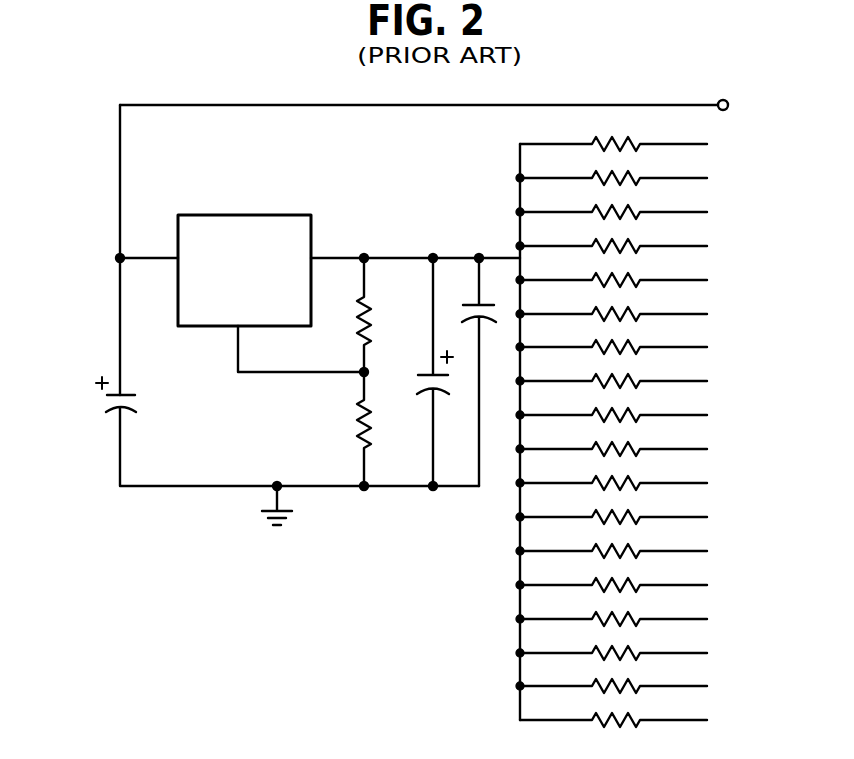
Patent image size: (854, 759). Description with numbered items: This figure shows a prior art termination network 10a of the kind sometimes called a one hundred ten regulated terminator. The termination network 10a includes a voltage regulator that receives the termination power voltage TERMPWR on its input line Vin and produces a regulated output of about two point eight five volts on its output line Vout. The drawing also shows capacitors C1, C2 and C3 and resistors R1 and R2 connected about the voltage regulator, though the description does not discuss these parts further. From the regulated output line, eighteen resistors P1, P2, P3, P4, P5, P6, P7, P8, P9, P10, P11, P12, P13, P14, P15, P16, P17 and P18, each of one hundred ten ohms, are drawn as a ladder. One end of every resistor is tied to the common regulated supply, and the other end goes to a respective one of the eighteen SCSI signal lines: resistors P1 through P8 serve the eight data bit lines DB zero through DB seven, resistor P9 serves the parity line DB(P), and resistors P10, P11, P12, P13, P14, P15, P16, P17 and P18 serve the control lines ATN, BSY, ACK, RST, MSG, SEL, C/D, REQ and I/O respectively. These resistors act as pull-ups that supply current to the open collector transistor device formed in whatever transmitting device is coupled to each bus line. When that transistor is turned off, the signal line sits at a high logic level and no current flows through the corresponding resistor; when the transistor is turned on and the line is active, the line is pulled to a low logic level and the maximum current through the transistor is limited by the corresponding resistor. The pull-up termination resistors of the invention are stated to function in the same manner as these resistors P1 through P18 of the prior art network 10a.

The termination network 10a is at (104, 191).
The input capacitor 4.7 uF C1 is at (129, 408).
The output capacitor 22 uF C2 is at (416, 384).
The bypass capacitor 0.1 uF C3 is at (488, 308).
The resistor R1 is at (370, 297).
The resistor R2 is at (357, 415).
The 110 ohm resistor P1 is at (592, 144).
The 110 ohm resistor P2 is at (592, 178).
The 110 ohm resistor P3 is at (592, 212).
The 110 ohm resistor P4 is at (592, 246).
The 110 ohm resistor P5 is at (592, 280).
The 110 ohm resistor P6 is at (592, 314).
The 110 ohm resistor P7 is at (592, 347).
The 110 ohm resistor P8 is at (592, 381).
The 110 ohm resistor P9 is at (592, 415).
The 110 ohm resistor P10 is at (592, 449).
The 110 ohm resistor P11 is at (592, 483).
The 110 ohm resistor P12 is at (592, 517).
The 110 ohm resistor P13 is at (592, 551).
The 110 ohm resistor P14 is at (592, 585).
The 110 ohm resistor P15 is at (592, 619).
The 110 ohm resistor P16 is at (592, 653).
The 110 ohm resistor P17 is at (592, 686).
The 110 ohm resistor P18 is at (592, 720).